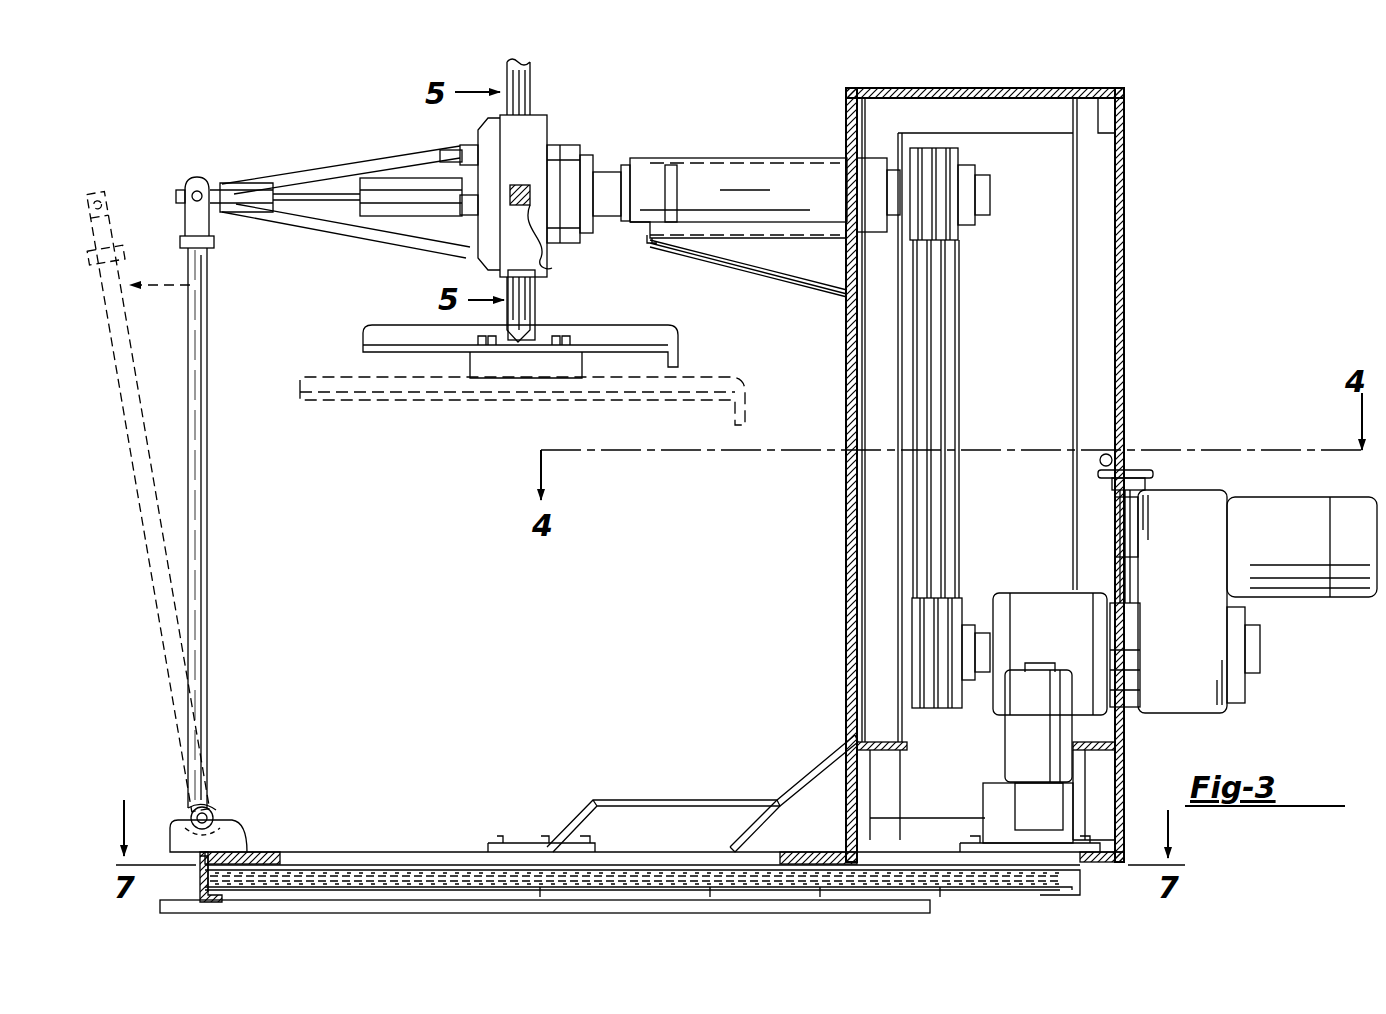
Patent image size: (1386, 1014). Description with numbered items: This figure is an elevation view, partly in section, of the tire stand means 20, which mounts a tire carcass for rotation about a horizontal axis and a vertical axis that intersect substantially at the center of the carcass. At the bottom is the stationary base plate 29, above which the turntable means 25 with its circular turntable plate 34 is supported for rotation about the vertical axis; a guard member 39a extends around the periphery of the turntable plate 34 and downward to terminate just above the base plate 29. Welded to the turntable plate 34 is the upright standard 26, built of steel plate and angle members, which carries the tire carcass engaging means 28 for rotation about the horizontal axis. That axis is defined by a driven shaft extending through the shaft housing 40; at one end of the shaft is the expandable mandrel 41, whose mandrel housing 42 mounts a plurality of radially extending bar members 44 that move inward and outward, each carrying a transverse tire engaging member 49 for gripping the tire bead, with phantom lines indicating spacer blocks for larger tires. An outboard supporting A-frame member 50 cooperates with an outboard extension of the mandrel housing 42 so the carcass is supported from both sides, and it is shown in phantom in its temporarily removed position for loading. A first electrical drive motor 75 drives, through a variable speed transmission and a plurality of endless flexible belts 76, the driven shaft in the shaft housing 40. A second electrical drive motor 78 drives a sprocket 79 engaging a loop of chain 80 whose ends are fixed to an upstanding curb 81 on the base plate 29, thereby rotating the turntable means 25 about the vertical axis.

The tire stand means 20 is at (1152, 370).
The turntable means 25 is at (386, 846).
The upright standard 26 is at (1128, 312).
The tire carcass engaging means 28 is at (478, 124).
The base plate 29 is at (910, 898).
The turntable plate 34 is at (358, 852).
The guard member 39a is at (178, 879).
The shaft housing 40 is at (790, 165).
The expandable mandrel 41 is at (547, 114).
The mandrel housing 42 is at (530, 135).
The bar members 44 is at (540, 60).
The tire engaging member 49 is at (620, 335).
The outboard supporting A-frame member 50 is at (207, 540).
The first electrical drive motor 75 is at (1276, 506).
The endless flexible belts 76 is at (920, 366).
The second electrical drive motor 78 is at (1020, 722).
The sprocket 79 is at (1062, 888).
The chain 80 is at (462, 875).
The upstanding curb 81 is at (406, 870).